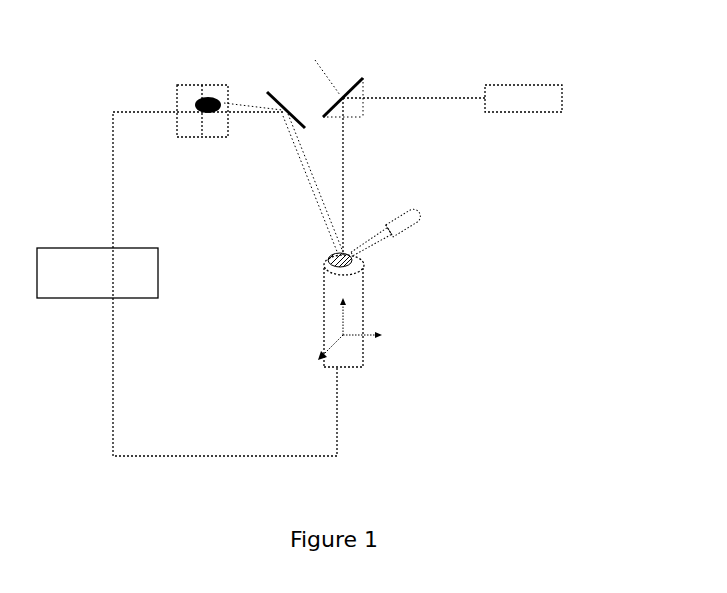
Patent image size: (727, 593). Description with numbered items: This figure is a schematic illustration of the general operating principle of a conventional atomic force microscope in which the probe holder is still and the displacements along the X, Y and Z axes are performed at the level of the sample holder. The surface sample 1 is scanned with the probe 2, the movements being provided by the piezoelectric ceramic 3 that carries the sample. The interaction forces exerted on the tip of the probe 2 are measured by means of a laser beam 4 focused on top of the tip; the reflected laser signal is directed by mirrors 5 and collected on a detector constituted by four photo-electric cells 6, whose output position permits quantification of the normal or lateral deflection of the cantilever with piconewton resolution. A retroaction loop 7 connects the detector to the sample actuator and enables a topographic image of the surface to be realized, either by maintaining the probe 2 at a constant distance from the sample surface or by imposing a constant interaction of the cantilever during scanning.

The surface sample 1 is at (345, 257).
The probe 2 is at (342, 262).
The piezoelectric ceramic 3 is at (363, 311).
The laser beam 4 is at (562, 98).
The mirrors 5 is at (277, 98).
The four photo-electric cells 6 is at (185, 86).
The retroaction loop 7 is at (57, 249).